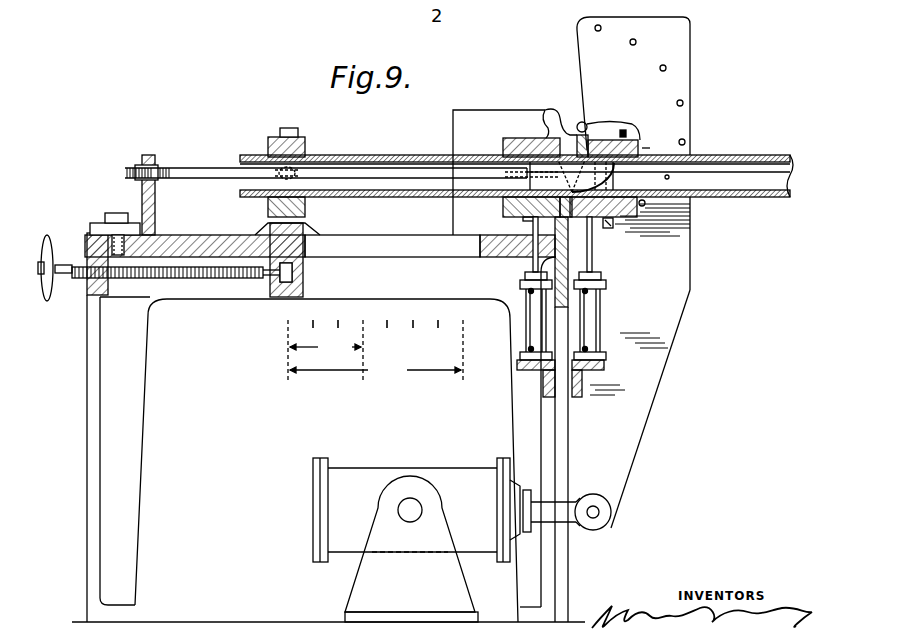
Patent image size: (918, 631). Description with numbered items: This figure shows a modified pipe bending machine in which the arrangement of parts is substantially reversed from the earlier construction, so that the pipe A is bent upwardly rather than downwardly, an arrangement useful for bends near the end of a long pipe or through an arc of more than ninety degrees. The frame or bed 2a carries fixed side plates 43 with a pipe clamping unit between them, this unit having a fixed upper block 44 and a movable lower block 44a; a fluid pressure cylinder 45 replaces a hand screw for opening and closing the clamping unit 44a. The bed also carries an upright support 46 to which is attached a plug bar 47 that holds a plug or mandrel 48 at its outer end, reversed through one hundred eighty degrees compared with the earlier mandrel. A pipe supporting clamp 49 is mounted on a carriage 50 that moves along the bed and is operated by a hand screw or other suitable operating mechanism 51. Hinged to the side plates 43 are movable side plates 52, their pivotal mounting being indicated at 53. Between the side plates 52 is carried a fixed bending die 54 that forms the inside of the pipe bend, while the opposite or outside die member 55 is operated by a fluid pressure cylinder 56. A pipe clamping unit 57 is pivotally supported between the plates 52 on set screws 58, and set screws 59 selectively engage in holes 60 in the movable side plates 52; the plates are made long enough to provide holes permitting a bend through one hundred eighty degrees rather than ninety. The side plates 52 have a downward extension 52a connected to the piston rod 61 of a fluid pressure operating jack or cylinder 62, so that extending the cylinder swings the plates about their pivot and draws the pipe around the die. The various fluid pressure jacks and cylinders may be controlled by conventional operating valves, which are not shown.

The frame or bed 2a is at (233, 300).
The tube A is at (392, 157).
The side plates 43 is at (489, 120).
The fixed upper block 44 is at (520, 139).
The movable lower block 44a is at (508, 212).
The fluid pressure cylinder 45 is at (525, 300).
The upright support 46 is at (151, 165).
The plug bar 47 is at (210, 169).
The plug or mandrel 48 is at (424, 248).
The pipe supporting clamp 49 is at (306, 146).
The carriage 50 is at (320, 233).
The hand screw or operating mechanism 51 is at (140, 280).
The movable side plates 52 is at (690, 44).
The downward extension 52a is at (644, 433).
The pivotal mounting 53 is at (607, 140).
The fixed bending die 54 is at (563, 119).
The outside die member 55 is at (592, 219).
The fluid pressure cylinder 56 is at (600, 312).
The pipe clamping unit 57 is at (638, 148).
The set screws 58 is at (587, 124).
The set screws 59 is at (613, 226).
The holes 60 is at (684, 105).
The piston rod 61 is at (578, 528).
The fluid pressure operating jack or cylinder 62 is at (388, 478).